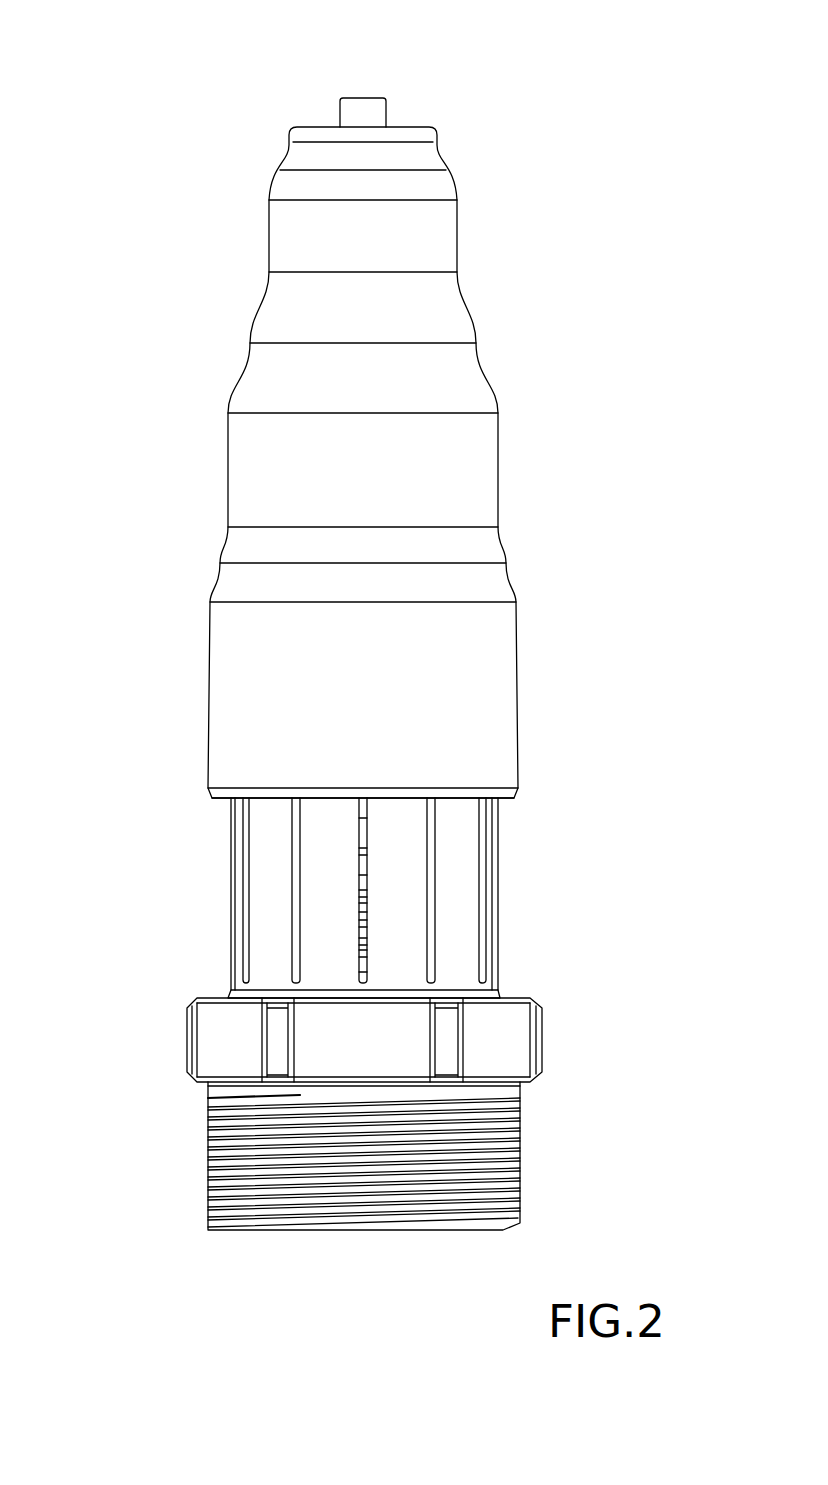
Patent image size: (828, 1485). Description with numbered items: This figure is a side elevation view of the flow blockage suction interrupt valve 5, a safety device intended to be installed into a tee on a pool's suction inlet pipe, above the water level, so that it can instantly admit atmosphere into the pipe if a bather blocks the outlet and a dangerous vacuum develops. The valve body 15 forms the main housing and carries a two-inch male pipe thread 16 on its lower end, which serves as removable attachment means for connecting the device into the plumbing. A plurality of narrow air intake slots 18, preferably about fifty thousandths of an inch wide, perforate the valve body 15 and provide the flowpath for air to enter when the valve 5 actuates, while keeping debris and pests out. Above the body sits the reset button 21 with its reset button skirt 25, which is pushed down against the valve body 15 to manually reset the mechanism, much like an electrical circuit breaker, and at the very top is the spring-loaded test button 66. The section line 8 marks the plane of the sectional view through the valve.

The flow blockage suction interrupt valve 5 is at (590, 390).
The test button 66 is at (377, 113).
The reset button 21 is at (447, 462).
The reset button skirt 25 is at (227, 705).
The air intake slots 18 is at (368, 949).
The valve body 15 is at (480, 1033).
The male pipe thread 16 is at (207, 1160).
The section line 8- 8 is at (363, 93).